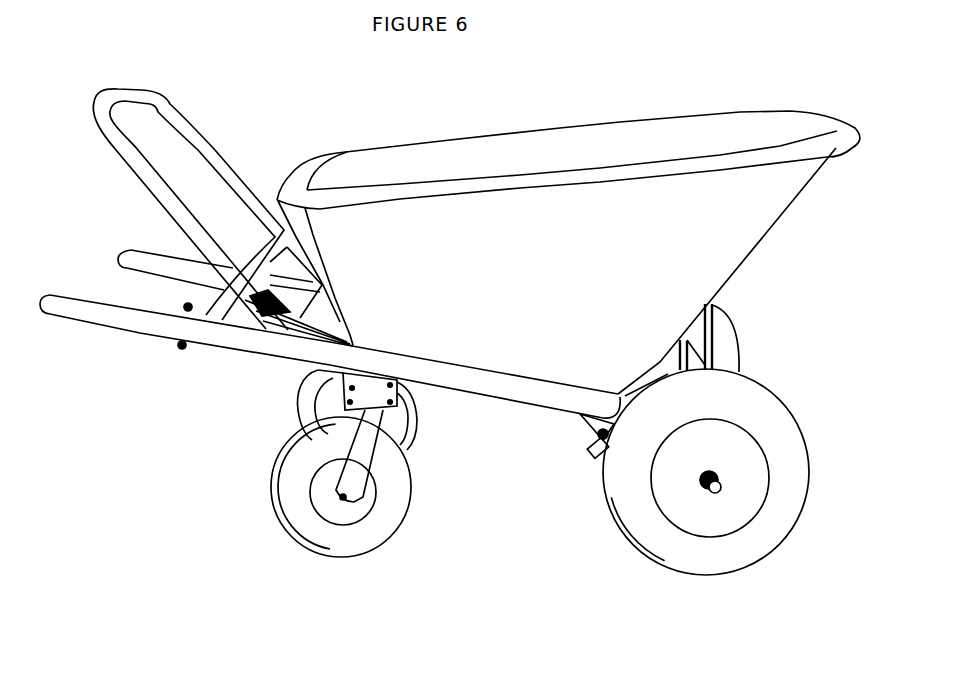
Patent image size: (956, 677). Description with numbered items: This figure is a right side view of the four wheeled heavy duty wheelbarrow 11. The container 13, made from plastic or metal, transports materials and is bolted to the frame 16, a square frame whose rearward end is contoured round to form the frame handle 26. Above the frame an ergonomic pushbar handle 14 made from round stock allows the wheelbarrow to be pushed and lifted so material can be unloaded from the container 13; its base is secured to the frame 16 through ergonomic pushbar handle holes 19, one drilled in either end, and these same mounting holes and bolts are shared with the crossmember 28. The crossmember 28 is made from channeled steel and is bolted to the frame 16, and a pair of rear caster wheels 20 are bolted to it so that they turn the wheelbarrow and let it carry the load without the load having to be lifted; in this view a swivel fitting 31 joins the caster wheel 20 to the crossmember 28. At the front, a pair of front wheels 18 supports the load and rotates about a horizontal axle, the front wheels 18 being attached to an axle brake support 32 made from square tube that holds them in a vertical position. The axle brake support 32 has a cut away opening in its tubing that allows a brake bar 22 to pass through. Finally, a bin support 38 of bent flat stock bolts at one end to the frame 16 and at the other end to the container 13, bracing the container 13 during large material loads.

The four wheeled heavy duty wheelbarrow 11 is at (358, 136).
The container 13 is at (634, 281).
The ergonomic pushbar handle 14 is at (127, 97).
The frame 16 is at (473, 387).
The front wheels 18 is at (724, 362).
The ergonomic pushbar handle holes 19 is at (185, 307).
The rear caster wheel 20 is at (322, 407).
The brake bar 22 is at (591, 446).
The frame handle 26 is at (131, 250).
The crossmember 28 is at (371, 388).
The swivel caster fork 31 is at (387, 430).
The axle brake support 32 is at (726, 483).
The bin support 38 is at (708, 345).